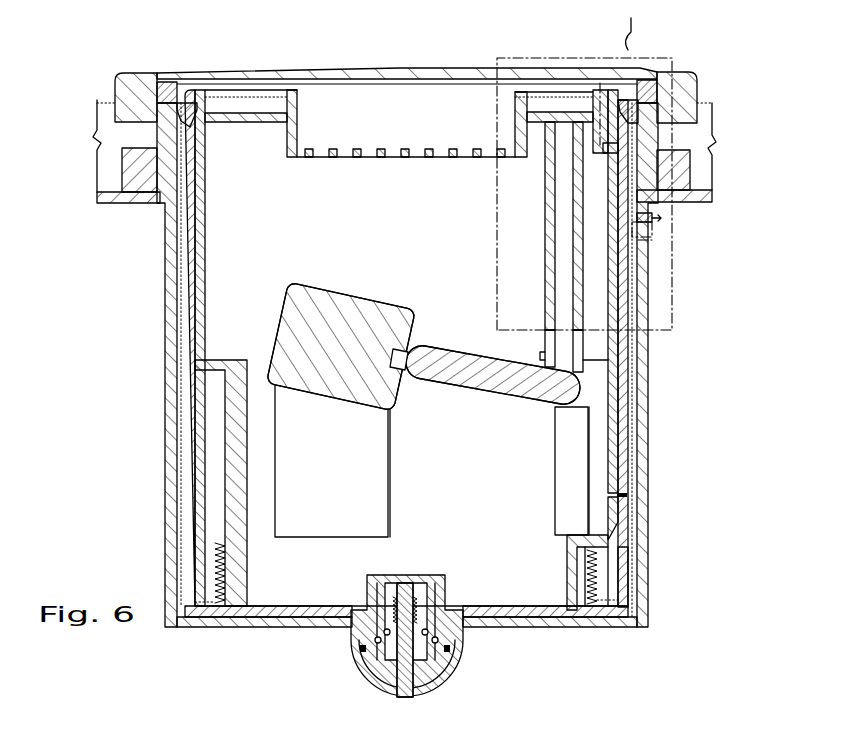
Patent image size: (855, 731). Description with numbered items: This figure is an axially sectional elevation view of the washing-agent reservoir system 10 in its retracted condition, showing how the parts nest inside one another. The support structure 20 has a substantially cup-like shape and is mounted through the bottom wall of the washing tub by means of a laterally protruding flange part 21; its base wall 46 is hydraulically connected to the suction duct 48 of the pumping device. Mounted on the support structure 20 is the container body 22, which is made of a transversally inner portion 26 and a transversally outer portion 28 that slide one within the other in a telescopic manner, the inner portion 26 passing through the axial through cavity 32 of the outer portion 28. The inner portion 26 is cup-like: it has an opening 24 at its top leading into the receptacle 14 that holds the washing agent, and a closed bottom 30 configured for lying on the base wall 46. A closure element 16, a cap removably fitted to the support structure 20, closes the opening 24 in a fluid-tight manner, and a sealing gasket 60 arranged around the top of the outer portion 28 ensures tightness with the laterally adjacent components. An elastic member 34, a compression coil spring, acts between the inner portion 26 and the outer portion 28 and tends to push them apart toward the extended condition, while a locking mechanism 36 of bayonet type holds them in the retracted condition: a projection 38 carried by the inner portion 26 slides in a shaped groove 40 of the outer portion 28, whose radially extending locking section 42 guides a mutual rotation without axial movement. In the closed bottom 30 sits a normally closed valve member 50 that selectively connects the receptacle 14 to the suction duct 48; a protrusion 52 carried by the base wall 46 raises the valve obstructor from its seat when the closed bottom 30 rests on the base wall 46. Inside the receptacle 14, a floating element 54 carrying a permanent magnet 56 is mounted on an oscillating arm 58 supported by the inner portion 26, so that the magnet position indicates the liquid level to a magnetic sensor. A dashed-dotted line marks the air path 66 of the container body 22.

The system 10 is at (393, 352).
The receptacle 14 is at (391, 237).
The closure element 16 is at (691, 66).
The support structure 20 is at (166, 250).
The flange part 21 is at (688, 204).
The container body 22 is at (326, 348).
The opening 24 is at (292, 128).
The transversally inner portion 26 is at (196, 313).
The transversally outer portion 28 is at (174, 289).
The closed bottom 30 is at (523, 616).
The axial through cavity 32 is at (196, 378).
The elastic member 34 is at (597, 590).
The locking mechanism 36 is at (664, 543).
The projection 38 is at (619, 512).
The groove 40 is at (636, 501).
The locking section 42 is at (621, 563).
The base wall 46 is at (517, 628).
The suction duct 48 is at (387, 672).
The valve member 50 is at (400, 607).
The protrusion 52 is at (411, 677).
The floating element 54 is at (300, 289).
The permanent magnet 56 is at (397, 357).
The oscillating arm 58 is at (497, 384).
The sealing gasket 60 is at (187, 106).
The air path 66 is at (666, 240).